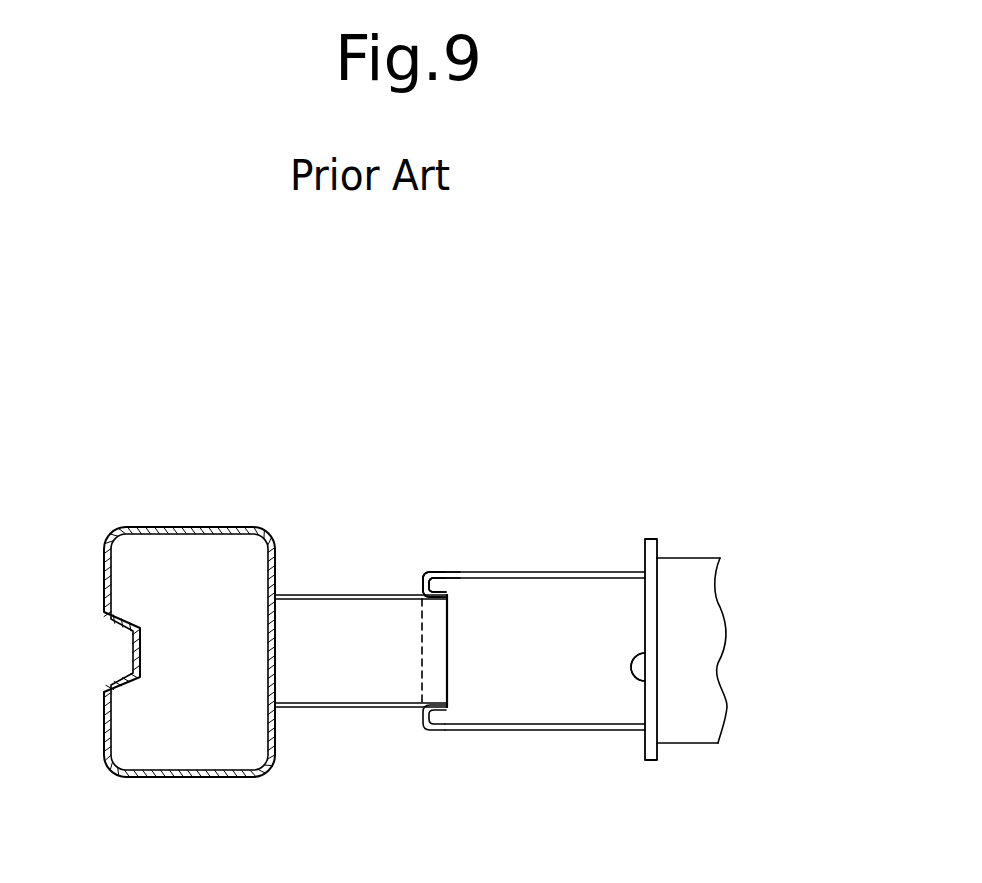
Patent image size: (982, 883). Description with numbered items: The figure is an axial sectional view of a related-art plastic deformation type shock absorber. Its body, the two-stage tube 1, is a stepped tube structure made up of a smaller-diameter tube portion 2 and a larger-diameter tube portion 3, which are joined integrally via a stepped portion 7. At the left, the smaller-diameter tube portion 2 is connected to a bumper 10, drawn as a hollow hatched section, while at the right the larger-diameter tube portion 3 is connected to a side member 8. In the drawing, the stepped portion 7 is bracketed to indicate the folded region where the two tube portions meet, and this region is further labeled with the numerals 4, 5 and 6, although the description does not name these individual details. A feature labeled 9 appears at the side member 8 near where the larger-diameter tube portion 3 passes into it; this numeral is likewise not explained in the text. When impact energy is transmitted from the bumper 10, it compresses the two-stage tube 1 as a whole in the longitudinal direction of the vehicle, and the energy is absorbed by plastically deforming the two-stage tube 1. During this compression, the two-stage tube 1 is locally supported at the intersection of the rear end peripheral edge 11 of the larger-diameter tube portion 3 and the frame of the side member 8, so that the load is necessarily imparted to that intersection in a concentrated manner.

The two-stage tube 1 is at (425, 739).
The smaller-diameter tube portion 2 is at (352, 682).
The larger-diameter tube portion 3 is at (513, 682).
The flange portion 4 is at (415, 593).
The bent portion 5 is at (422, 590).
The engaging portion 6 is at (442, 572).
The stepped portion 7 is at (293, 459).
The side member 8 is at (678, 612).
The hole 9 is at (652, 645).
The bumper 10 is at (188, 527).
The rear end peripheral edge 11 is at (650, 683).